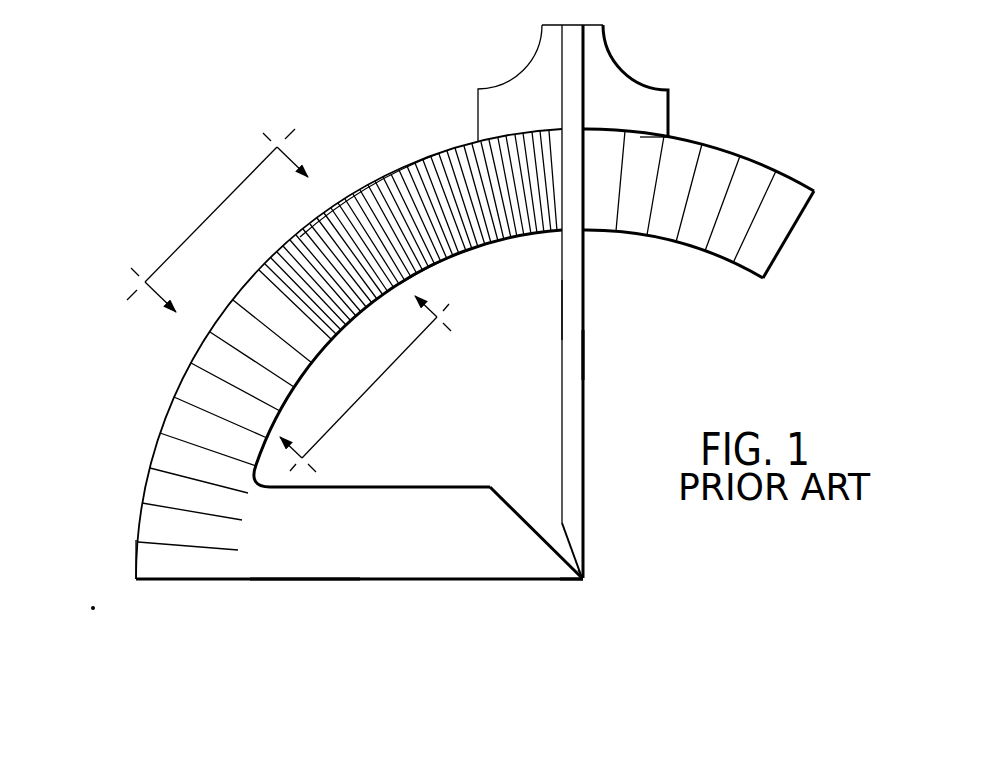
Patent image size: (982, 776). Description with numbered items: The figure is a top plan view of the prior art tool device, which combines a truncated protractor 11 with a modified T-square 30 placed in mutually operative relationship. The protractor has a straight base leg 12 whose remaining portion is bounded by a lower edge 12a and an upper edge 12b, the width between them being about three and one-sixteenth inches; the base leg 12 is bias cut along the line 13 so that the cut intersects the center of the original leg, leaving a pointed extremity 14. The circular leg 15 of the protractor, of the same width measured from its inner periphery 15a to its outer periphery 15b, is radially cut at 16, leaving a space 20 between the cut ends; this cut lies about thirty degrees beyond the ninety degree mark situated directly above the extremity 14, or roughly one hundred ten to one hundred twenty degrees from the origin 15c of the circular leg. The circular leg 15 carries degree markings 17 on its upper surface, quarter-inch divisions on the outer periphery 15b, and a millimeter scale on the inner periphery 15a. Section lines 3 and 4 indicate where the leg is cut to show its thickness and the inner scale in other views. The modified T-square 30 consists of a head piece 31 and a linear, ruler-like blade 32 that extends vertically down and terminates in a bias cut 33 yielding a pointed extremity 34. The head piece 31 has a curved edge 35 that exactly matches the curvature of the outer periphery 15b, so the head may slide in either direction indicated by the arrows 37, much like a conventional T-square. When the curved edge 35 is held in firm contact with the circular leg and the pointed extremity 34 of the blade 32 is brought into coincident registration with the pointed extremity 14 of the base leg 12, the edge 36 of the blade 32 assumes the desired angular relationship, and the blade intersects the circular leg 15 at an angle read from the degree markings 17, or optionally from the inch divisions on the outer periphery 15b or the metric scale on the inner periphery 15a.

The section line 3- 3 is at (230, 236).
The section line 4- 4 is at (381, 387).
The truncated protractor 11 is at (811, 171).
The base leg 12 is at (427, 562).
The lower edge 12a is at (307, 582).
The upper edge 12b is at (415, 486).
The bias cut line 13 is at (509, 503).
The pointed extremity 14 is at (571, 583).
The circular leg 15 is at (163, 452).
The inner periphery 15a is at (470, 252).
The outer periphery 15b is at (390, 164).
The origin of the circular leg 15c is at (137, 580).
The radial cut 16 is at (792, 245).
The degree markings 17 is at (172, 473).
The space 20 is at (686, 363).
The modified T-square 30 is at (587, 415).
The head piece 31 is at (615, 72).
The blade 32 is at (573, 315).
The bias cut 33 is at (565, 535).
The pointed extremity 34 is at (586, 558).
The curved edge 35 is at (647, 125).
The edge of blade 36 is at (583, 358).
The arrows 37 is at (465, 115).